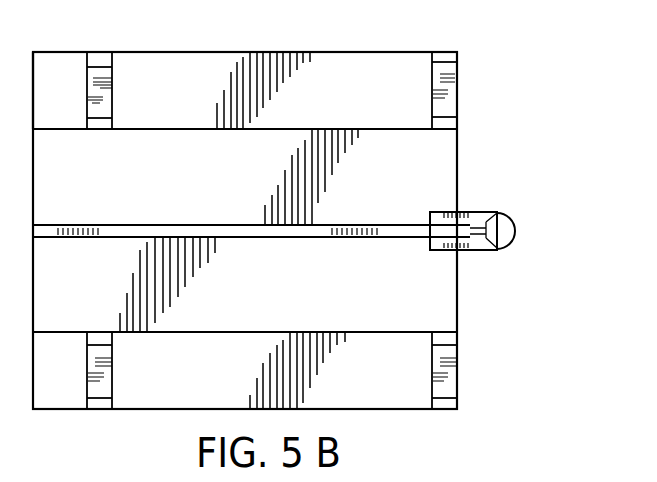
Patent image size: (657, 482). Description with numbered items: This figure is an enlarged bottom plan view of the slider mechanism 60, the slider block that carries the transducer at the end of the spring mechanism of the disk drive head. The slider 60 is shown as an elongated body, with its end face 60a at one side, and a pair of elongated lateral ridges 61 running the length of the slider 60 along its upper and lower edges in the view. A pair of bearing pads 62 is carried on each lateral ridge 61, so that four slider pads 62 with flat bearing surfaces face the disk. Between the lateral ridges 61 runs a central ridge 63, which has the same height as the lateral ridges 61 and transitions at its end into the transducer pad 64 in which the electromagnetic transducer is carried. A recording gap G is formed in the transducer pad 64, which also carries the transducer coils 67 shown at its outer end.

The slider mechanism 60 is at (445, 146).
The end face of housing 60a is at (32, 73).
The elongated lateral ridge 61 is at (307, 63).
The bearing pad 62 is at (113, 75).
The central ridge 63 is at (150, 231).
The transducer pad 64 is at (461, 212).
The transducer coils 67 is at (514, 221).
The recording gap G is at (470, 251).